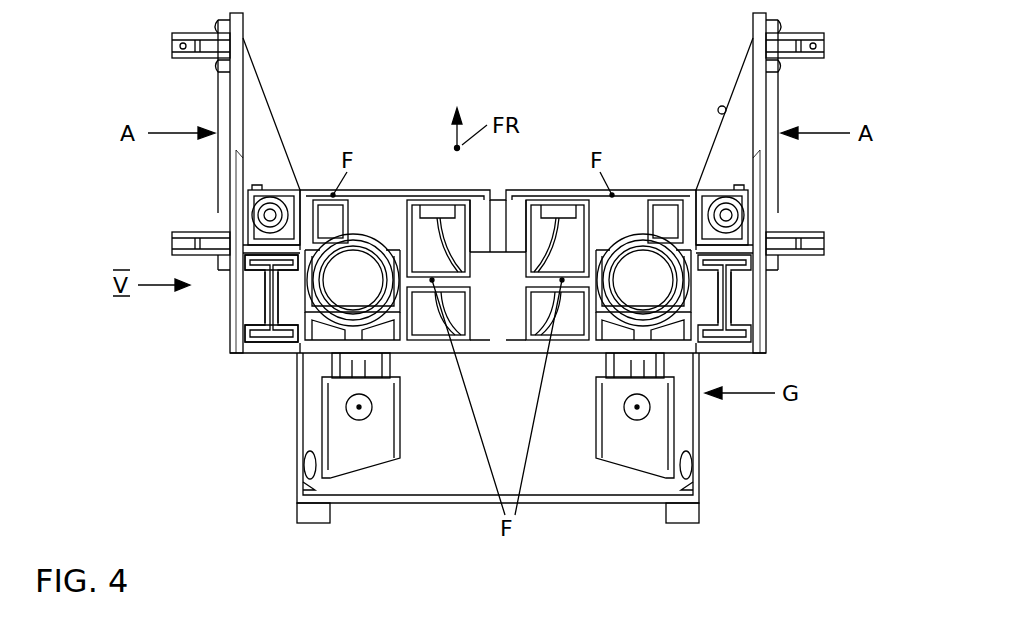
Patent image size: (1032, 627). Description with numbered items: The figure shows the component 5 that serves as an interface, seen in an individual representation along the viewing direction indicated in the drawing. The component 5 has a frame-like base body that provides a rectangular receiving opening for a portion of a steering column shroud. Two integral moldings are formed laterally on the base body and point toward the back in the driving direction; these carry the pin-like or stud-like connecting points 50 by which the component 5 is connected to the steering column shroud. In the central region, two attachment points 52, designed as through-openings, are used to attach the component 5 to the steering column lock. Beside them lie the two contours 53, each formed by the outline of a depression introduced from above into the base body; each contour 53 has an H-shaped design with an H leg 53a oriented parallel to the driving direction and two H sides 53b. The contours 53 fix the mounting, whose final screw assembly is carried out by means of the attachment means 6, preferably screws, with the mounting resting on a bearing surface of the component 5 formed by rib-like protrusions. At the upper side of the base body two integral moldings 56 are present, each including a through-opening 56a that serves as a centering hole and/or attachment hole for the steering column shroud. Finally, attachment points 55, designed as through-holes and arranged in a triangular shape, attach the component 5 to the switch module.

The component 5 is at (557, 104).
The attachment means 6 is at (270, 215).
The stud-like connecting points 50 is at (183, 46).
The attachment points 52 is at (332, 288).
The contours 53 is at (272, 296).
The H leg 53a is at (272, 312).
The H sides 53b is at (273, 263).
The attachment points 55 is at (310, 513).
The integral moldings 56 is at (357, 458).
The through-openings 56a is at (359, 407).